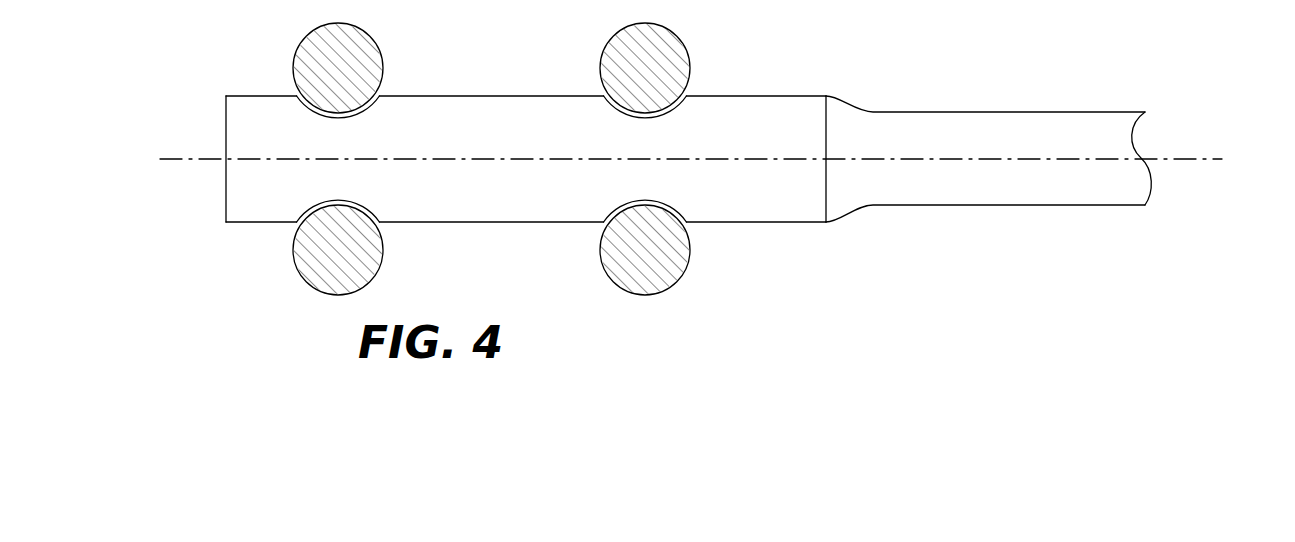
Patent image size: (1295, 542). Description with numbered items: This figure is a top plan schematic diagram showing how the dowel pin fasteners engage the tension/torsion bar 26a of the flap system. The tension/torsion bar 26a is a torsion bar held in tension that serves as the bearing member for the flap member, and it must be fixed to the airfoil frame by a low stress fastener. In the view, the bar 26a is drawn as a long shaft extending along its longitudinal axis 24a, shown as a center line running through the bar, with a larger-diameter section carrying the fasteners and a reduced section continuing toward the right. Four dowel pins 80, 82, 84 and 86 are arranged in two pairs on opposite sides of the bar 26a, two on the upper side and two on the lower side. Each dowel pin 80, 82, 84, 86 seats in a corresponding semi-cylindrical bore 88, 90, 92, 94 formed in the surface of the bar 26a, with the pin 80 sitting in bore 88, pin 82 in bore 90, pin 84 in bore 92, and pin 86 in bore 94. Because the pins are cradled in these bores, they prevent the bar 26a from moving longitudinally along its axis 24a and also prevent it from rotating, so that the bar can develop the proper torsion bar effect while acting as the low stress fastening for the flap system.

The tension/torsion bar 26a is at (226, 126).
The axis 24a is at (1180, 158).
The dowel pin 80 is at (300, 47).
The dowel pin 82 is at (607, 47).
The dowel pin 84 is at (300, 277).
The dowel pin 86 is at (607, 277).
The semi-cylindrical bore 88 is at (310, 113).
The semi-cylindrical bore 90 is at (617, 113).
The semi-cylindrical bore 92 is at (310, 205).
The semi-cylindrical bore 94 is at (617, 205).